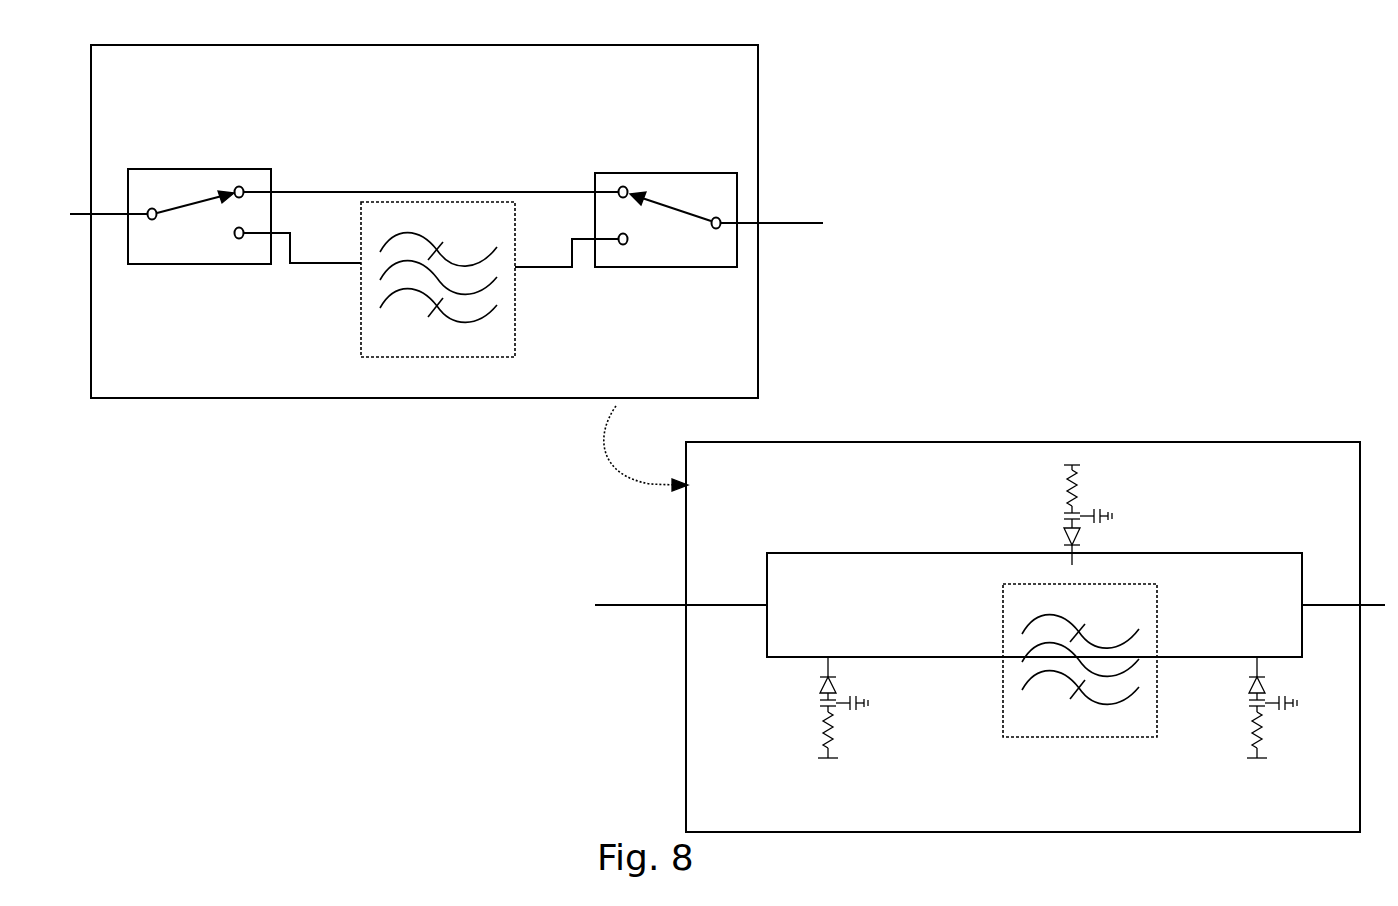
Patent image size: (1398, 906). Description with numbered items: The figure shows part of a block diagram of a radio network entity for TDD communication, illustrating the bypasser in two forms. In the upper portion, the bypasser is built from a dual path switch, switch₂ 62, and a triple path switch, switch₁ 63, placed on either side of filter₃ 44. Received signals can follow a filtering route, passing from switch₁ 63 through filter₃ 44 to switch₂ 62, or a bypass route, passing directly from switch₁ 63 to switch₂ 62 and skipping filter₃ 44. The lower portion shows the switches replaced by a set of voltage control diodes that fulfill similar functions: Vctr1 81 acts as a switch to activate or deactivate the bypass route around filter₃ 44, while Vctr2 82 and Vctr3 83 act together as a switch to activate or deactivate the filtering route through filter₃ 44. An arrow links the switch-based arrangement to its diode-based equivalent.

The filter₃ 44 is at (360, 330).
The switch₂ 62 is at (188, 270).
The switch₁ 63 is at (650, 275).
The Vctr1 81 is at (1125, 490).
The Vctr2 82 is at (890, 682).
The Vctr3 83 is at (1297, 681).